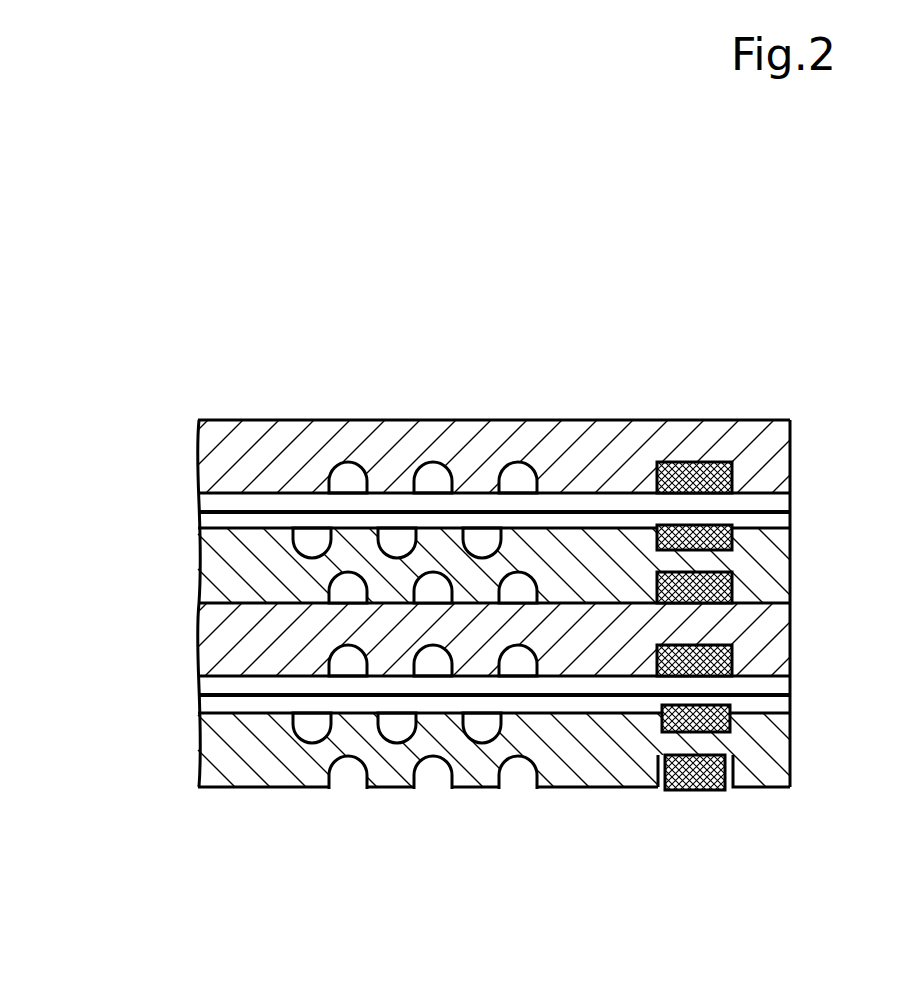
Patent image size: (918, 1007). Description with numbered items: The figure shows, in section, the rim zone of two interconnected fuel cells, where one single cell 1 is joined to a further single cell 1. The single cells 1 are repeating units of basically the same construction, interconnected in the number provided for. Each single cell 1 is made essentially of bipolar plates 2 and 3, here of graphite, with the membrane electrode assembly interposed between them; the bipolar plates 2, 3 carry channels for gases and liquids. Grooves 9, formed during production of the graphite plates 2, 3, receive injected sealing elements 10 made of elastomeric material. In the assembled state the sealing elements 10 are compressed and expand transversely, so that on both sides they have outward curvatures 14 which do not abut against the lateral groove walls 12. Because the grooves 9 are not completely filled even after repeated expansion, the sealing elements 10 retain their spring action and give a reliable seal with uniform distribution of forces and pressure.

The single cell 1 is at (73, 427).
The bipolar plate 2 is at (380, 443).
The bipolar plate 3 is at (238, 578).
The groove 9 is at (670, 463).
The sealing element 10 is at (733, 653).
The lateral groove wall 12 is at (733, 540).
The outward curvature 14 is at (732, 463).